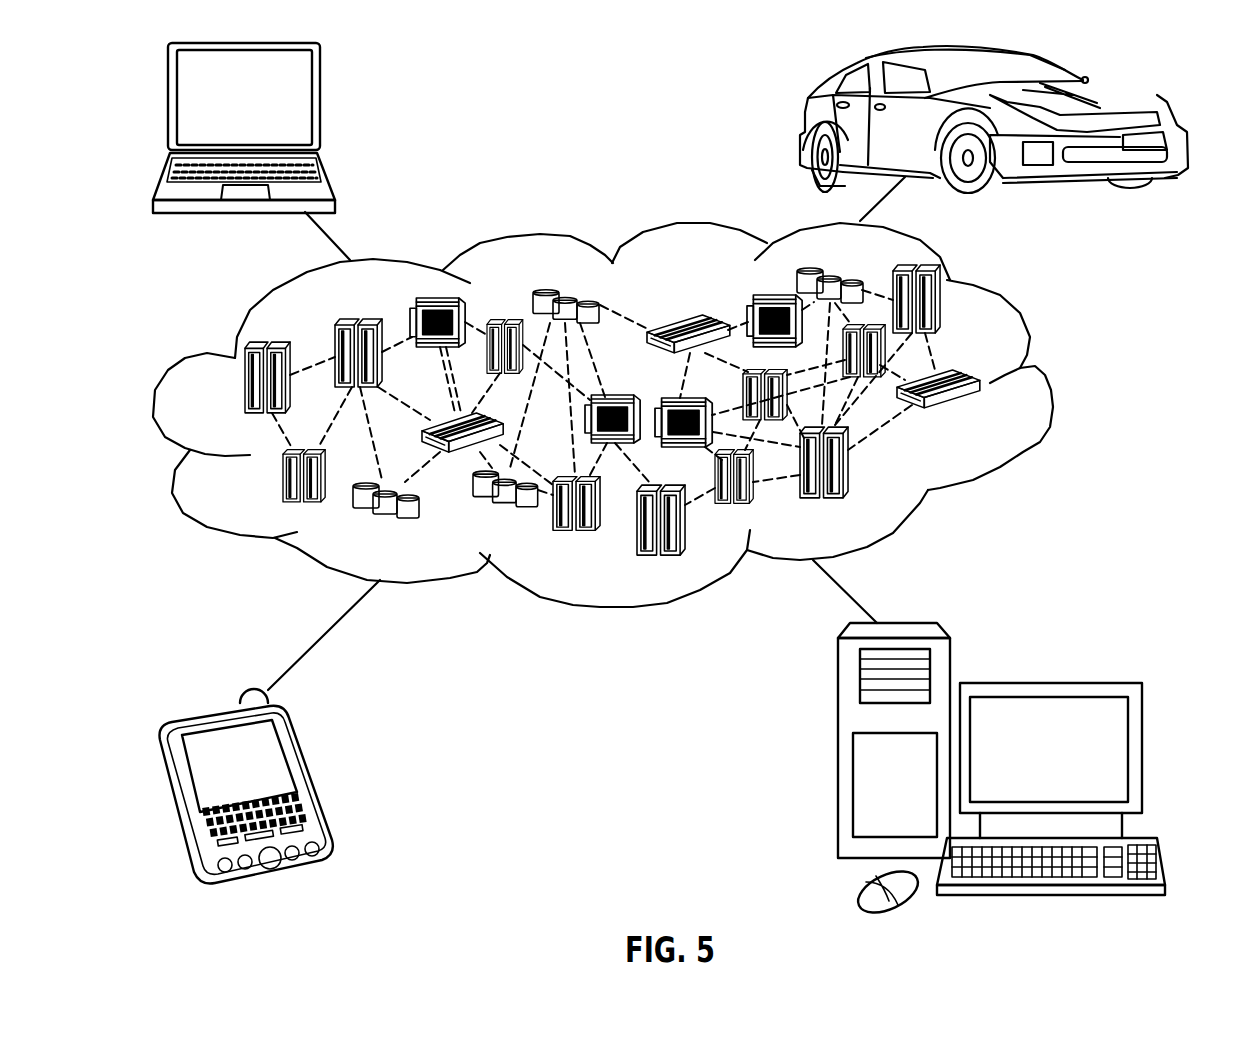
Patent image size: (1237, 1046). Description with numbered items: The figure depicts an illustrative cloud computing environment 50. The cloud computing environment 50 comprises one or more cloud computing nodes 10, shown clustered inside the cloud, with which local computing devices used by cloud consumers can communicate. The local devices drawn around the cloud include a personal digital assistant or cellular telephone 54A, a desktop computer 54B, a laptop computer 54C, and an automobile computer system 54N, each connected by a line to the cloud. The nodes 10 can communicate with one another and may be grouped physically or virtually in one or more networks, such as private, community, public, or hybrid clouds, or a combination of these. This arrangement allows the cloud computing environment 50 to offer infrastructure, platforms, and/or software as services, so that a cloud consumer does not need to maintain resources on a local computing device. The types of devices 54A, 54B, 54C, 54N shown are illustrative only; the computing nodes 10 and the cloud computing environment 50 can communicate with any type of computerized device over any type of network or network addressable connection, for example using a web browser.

The cloud computing node 10 is at (1040, 437).
The cloud computing environment 50 is at (1048, 381).
The personal digital assistant or cellular telephone 54A is at (310, 780).
The desktop computer 54B is at (1048, 682).
The laptop computer 54C is at (320, 108).
The automobile computer system 54N is at (803, 123).